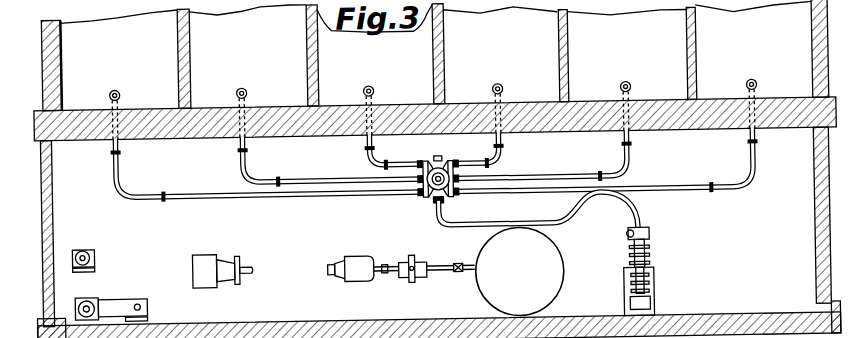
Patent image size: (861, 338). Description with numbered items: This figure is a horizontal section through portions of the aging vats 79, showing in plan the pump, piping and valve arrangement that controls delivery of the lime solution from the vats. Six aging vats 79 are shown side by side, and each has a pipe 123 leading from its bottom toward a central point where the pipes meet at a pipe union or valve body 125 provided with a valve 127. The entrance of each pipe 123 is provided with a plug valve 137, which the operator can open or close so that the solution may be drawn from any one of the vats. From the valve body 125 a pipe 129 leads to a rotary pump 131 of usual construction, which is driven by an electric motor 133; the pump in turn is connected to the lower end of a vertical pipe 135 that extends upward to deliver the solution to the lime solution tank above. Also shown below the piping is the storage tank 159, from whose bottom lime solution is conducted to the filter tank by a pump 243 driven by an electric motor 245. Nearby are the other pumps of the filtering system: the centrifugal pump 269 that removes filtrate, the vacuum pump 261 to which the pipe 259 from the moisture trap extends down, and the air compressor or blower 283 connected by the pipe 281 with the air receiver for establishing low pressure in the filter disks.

The aging vat 79 is at (436, 55).
The plug valve 137 is at (121, 90).
The pipe 123 is at (119, 166).
The pipe union or valve body 125 is at (440, 154).
The valve 127 is at (425, 196).
The pipe 129 is at (450, 228).
The rotary pump 131 is at (648, 254).
The electric motor 133 is at (652, 302).
The vertical pipe 135 is at (625, 236).
The storage tank 159 is at (483, 280).
The pump 243 is at (410, 262).
The electric motor 245 is at (356, 256).
The centrifugal pump 269 is at (206, 259).
The pipe 281 is at (93, 256).
The air compressor or blower 283 is at (84, 250).
The vacuum pump 261 is at (110, 304).
The pipe 259 is at (138, 303).